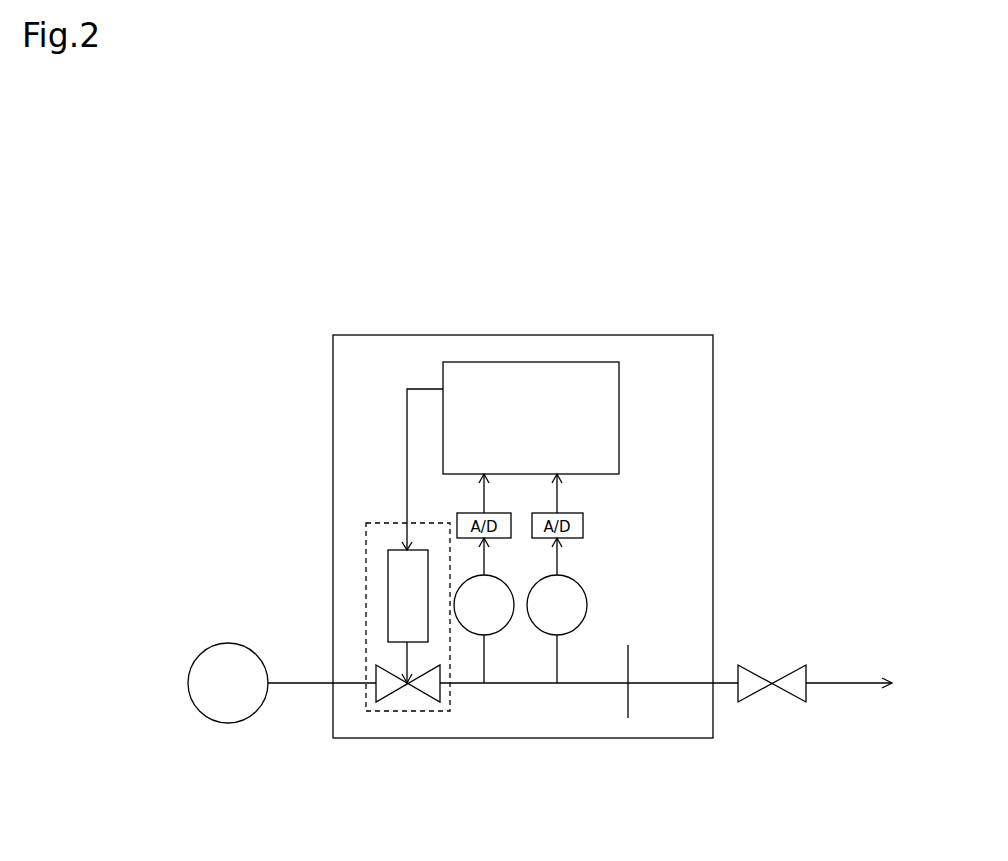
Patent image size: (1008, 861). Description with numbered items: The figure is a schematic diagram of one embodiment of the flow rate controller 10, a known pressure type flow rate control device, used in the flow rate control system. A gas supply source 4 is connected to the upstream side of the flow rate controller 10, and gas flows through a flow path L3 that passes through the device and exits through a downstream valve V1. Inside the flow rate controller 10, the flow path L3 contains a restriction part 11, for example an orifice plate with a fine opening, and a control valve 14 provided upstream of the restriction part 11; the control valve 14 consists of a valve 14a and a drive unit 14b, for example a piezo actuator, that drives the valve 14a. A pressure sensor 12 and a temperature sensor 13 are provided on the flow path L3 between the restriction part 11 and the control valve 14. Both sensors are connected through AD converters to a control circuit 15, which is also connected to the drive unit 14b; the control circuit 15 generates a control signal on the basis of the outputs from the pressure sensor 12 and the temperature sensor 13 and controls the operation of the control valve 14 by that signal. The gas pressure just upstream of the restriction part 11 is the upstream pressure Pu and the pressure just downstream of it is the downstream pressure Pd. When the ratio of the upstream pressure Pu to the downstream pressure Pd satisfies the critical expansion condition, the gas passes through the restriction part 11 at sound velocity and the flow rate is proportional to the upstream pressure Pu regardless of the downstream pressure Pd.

The gas supply source 4 is at (228, 723).
The flow rate controller 10 is at (713, 517).
The restriction part 11 is at (628, 688).
The pressure sensor 12 is at (570, 637).
The temperature sensor 13 is at (472, 637).
The control valve 14 is at (366, 660).
The valve 14a is at (393, 697).
The drive unit 14b is at (388, 593).
The control circuit 15 is at (612, 474).
The flow path L3 is at (520, 683).
The downstream valve V1 is at (767, 670).
The upstream pressure Pu is at (595, 680).
The downstream pressure Pd is at (655, 680).